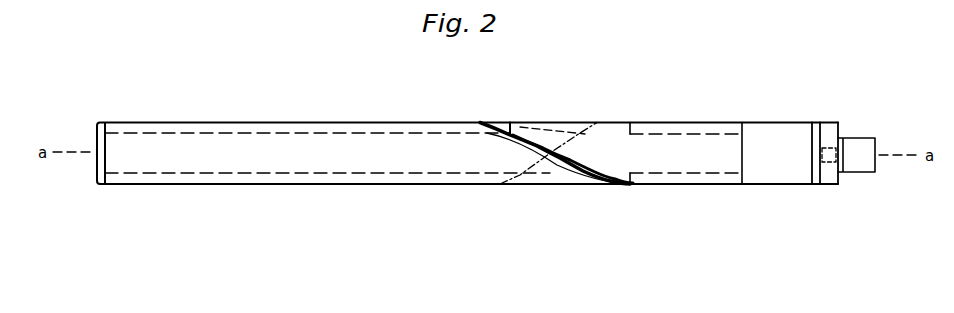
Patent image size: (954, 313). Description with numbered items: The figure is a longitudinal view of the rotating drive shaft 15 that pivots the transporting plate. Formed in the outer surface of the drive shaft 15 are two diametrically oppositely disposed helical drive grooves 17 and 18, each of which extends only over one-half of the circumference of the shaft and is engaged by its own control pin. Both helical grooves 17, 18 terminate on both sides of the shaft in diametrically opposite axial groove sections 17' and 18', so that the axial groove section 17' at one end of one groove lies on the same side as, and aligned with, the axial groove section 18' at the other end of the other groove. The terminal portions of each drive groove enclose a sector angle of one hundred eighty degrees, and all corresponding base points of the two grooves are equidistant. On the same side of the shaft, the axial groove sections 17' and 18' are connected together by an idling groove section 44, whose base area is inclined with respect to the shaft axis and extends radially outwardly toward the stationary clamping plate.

The drive shaft 15 is at (787, 133).
The helical drive groove 17 is at (586, 185).
The axial groove section 17' is at (307, 99).
The helical drive groove 18 is at (359, 155).
The axial groove section 18' is at (686, 119).
The idling groove section 44 is at (535, 122).